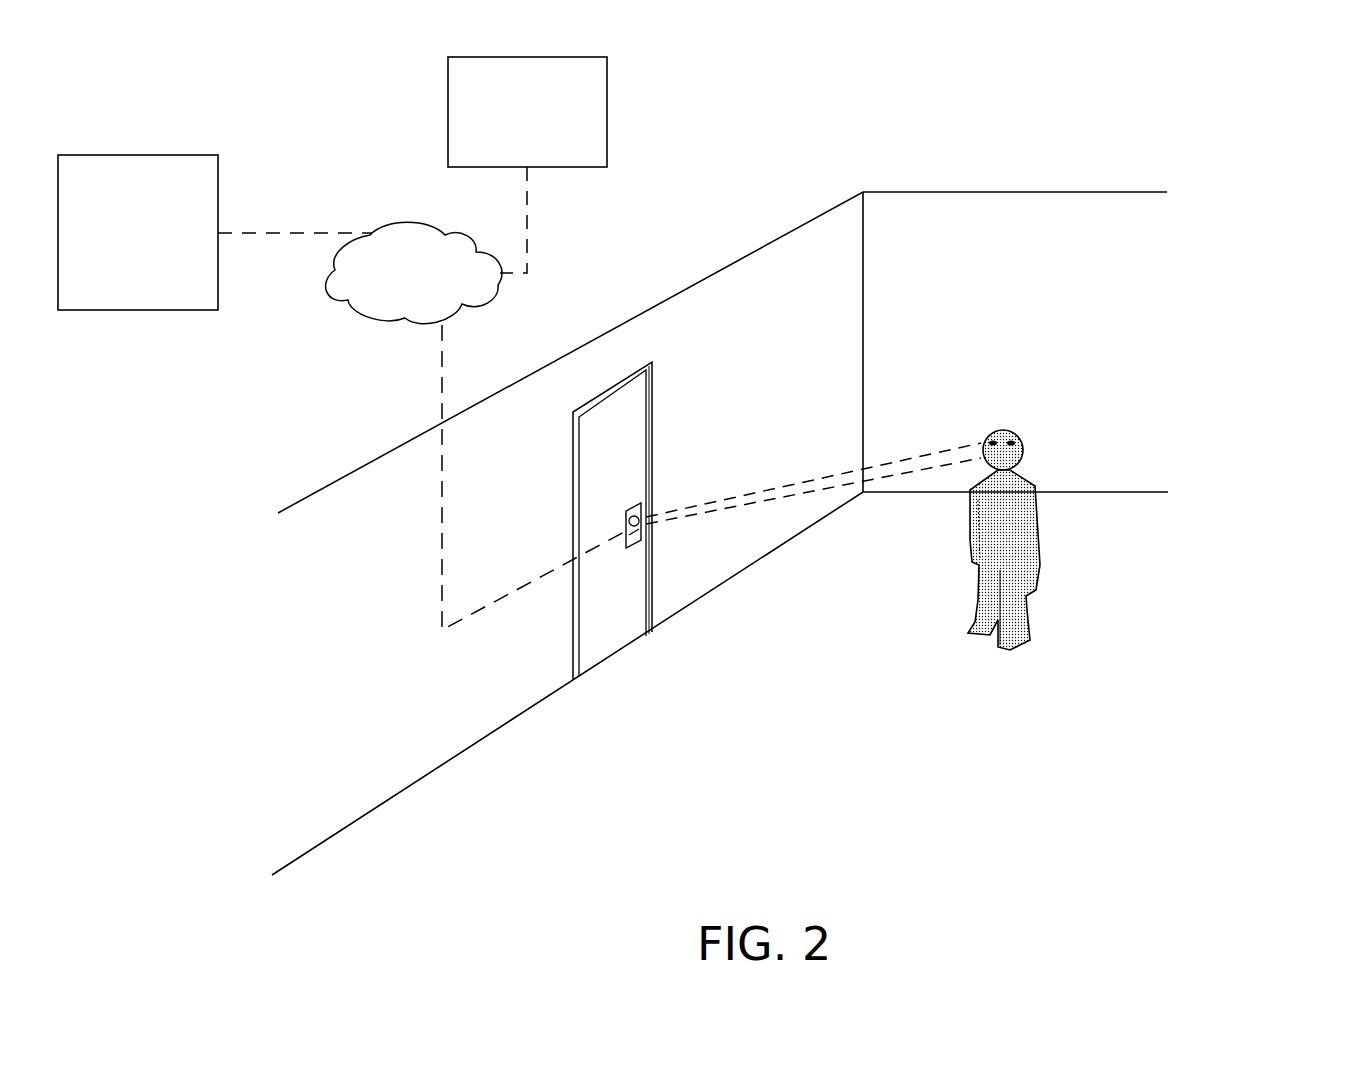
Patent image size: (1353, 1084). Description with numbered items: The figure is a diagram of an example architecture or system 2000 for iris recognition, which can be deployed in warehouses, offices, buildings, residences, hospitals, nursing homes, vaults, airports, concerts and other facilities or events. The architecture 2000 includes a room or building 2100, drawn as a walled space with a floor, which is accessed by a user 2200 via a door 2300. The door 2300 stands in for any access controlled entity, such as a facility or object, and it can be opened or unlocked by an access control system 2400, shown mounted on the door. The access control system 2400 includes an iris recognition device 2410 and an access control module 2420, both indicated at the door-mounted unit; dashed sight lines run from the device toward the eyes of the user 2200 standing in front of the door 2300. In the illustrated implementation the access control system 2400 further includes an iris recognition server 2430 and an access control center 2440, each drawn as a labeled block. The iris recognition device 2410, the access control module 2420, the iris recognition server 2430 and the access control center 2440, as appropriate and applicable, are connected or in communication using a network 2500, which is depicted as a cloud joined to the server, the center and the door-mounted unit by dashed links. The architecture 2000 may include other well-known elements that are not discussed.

The architecture or system 2000 is at (1176, 100).
The room or building 2100 is at (222, 418).
The user 2200 is at (1105, 636).
The door 2300 is at (612, 521).
The access control system 2400 is at (637, 593).
The iris recognition device 2410 is at (640, 492).
The access control module 2420 is at (646, 533).
The iris recognition server 2430 is at (118, 277).
The access control center 2440 is at (507, 157).
The network 2500 is at (382, 351).